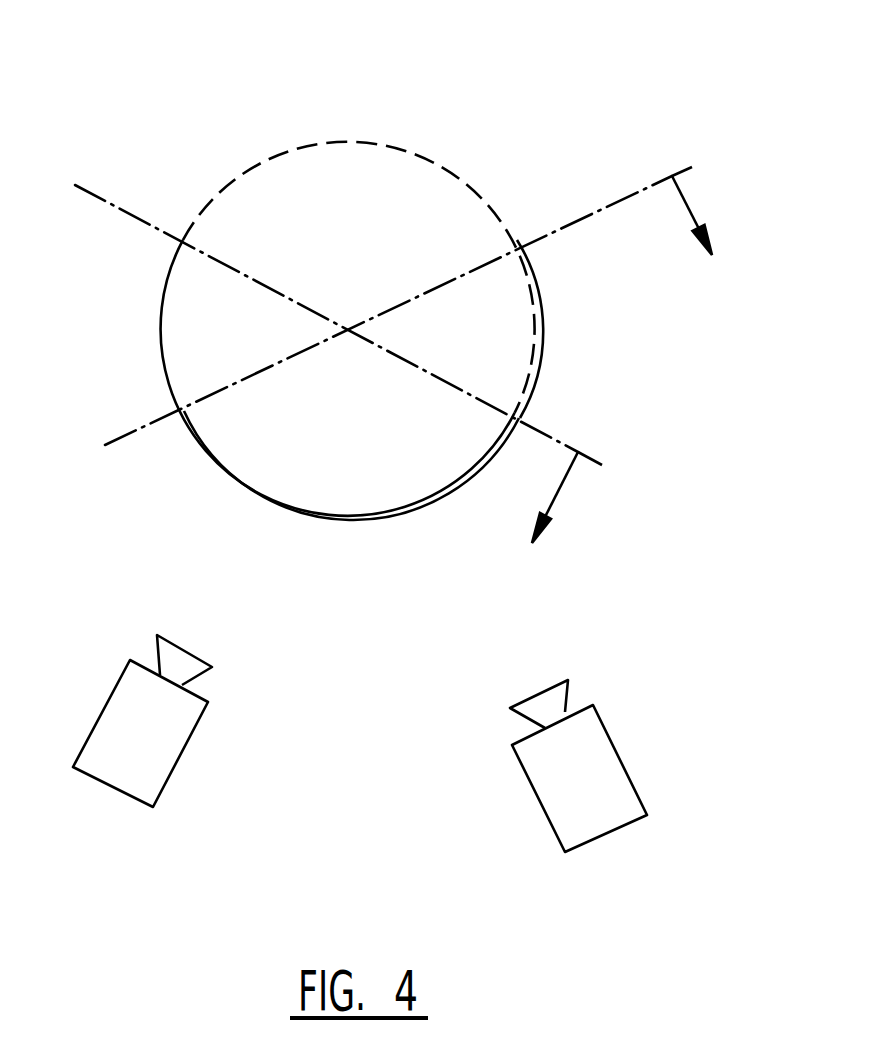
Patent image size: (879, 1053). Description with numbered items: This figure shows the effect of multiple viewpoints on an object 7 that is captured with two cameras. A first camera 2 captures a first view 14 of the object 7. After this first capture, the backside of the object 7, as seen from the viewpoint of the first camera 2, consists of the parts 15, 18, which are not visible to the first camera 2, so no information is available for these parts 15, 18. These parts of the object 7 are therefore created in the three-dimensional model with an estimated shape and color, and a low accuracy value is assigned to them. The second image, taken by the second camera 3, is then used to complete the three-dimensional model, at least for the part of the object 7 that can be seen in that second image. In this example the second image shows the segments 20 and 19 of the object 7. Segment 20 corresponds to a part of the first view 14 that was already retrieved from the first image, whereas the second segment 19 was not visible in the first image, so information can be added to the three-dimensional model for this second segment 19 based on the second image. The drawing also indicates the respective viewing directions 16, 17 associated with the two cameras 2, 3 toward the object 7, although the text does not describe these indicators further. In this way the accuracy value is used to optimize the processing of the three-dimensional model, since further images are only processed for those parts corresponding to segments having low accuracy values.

The first camera 2 is at (153, 735).
The second camera 3 is at (577, 770).
The object 7 is at (160, 316).
The first view 14 is at (368, 520).
The backside part of the object 15 is at (358, 143).
The viewing direction of first camera 16 is at (565, 487).
The viewing direction of second camera 17 is at (697, 211).
The backside part of the object 18 is at (535, 357).
The second segment 19 is at (539, 296).
The segment 20 is at (415, 497).